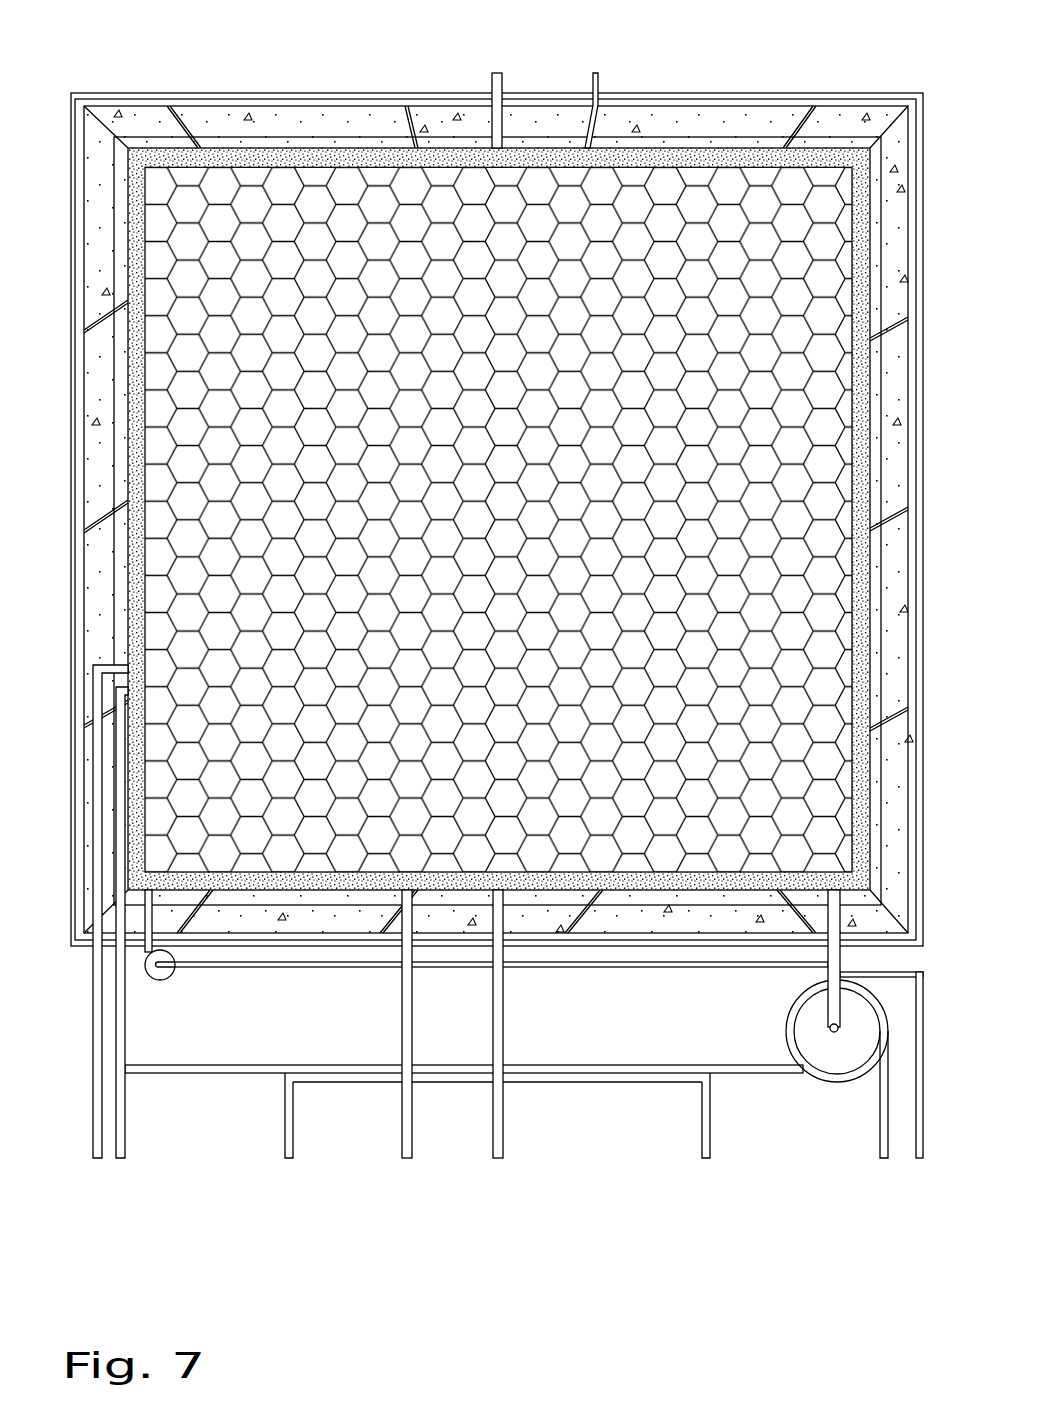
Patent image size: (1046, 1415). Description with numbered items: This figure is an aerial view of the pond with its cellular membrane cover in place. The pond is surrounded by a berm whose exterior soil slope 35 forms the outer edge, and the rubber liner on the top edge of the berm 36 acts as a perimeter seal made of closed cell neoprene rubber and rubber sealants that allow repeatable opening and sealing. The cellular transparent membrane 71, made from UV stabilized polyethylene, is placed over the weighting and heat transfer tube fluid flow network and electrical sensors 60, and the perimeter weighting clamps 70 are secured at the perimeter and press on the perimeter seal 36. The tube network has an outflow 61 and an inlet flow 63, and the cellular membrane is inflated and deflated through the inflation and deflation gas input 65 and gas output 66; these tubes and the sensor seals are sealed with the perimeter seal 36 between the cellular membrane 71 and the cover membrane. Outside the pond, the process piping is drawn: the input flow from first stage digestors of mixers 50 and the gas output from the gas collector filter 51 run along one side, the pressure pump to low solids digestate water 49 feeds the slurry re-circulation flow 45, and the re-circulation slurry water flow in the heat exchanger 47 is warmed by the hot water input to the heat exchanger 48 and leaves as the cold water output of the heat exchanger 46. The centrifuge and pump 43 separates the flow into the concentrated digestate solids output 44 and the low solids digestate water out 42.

The exterior soil slope of berm 35 is at (119, 120).
The weighting and heat transfer tube fluid flow network and electrical sensors 60 is at (183, 100).
The rubber liner on top edge of berm 36 is at (217, 142).
The perimeter weighting clamp 70 is at (300, 157).
The cellular transparent membrane 71 is at (445, 400).
The inflation and deflation gas output 66 is at (523, 83).
The outflow of the fluid flow network and electrical sensors 61 is at (595, 73).
The inflation and deflation gas input 65 is at (497, 1158).
The inlet flow for the fluid flow network and electrical sensors 63 is at (405, 1158).
The pressure pump to low solids digestate water 49 is at (168, 978).
The hot water input to heat exchanger 48 is at (287, 1158).
The input flow from first stage digestors of mixers 50 is at (121, 1160).
The gas output from gas collector filter 51 is at (96, 1160).
The re-circulation slurry water flow in heat exchanger 47 is at (630, 1068).
The cold water output of heat exchanger 46 is at (705, 1158).
The slurry re-circulation flow 45 is at (763, 1068).
The centrifuge and pump 43 is at (840, 1082).
The concentrated digestate solids output 44 is at (882, 1158).
The low solids digestate water out 42 is at (918, 1158).